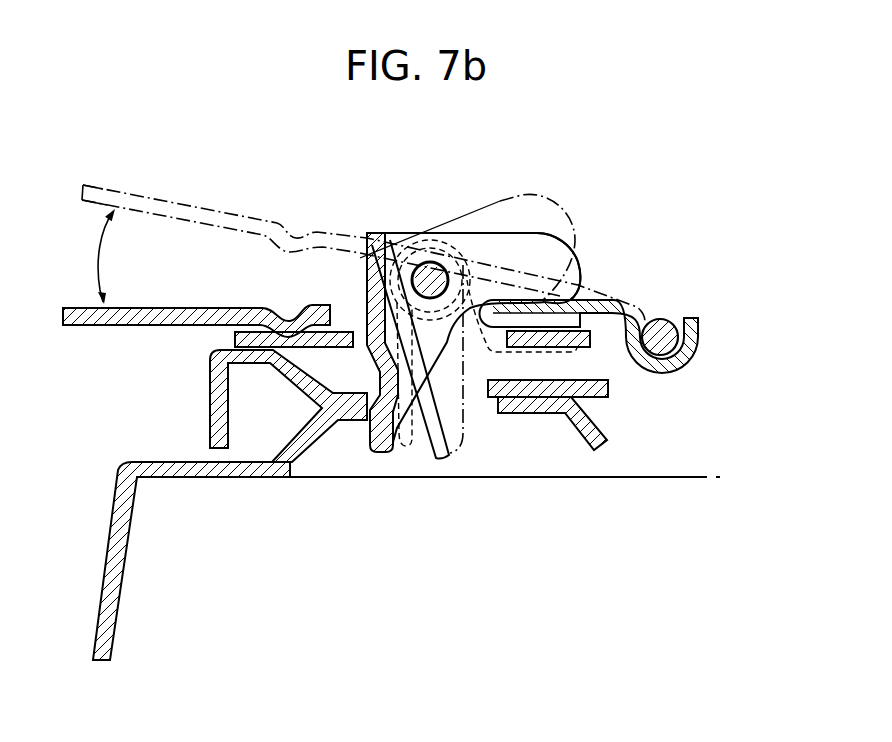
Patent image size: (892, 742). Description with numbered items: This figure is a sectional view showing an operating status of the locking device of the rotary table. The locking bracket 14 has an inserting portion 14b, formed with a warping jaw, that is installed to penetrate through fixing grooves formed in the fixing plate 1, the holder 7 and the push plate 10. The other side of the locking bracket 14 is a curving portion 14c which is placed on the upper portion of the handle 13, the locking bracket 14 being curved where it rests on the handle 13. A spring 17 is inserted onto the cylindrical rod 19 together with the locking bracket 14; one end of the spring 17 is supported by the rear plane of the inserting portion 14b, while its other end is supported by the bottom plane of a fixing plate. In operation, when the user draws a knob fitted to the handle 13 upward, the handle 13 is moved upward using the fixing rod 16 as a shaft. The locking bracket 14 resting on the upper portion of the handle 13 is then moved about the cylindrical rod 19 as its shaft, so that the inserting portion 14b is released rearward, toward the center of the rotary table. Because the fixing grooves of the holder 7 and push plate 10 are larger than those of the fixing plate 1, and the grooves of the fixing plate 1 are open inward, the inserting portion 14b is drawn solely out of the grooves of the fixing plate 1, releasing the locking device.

The fixing plate 1 is at (113, 582).
The holder 7 is at (537, 412).
The push plate 10 is at (217, 412).
The handle 13 is at (113, 314).
The locking bracket 14 is at (510, 228).
The inserting portion 14b is at (393, 452).
The curving portion 14c is at (572, 265).
The fixing rod 16 is at (658, 318).
The spring 17 is at (400, 232).
The cylindrical rod 19 is at (431, 270).